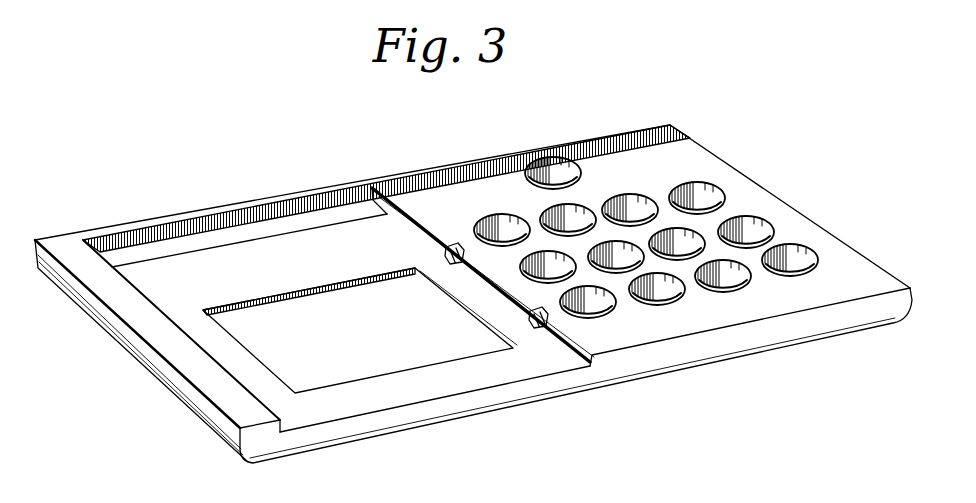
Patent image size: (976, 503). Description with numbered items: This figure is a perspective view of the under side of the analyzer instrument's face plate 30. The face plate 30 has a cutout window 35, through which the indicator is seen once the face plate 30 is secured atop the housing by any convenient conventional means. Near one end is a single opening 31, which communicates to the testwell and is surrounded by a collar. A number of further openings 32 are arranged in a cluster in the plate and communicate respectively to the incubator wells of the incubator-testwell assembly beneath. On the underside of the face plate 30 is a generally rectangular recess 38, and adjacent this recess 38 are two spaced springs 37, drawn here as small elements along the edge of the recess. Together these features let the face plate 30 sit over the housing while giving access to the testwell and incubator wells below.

The face plate 30 is at (204, 423).
The opening 31 is at (553, 158).
The openings 32 is at (803, 256).
The cutout window 35 is at (338, 377).
The springs 37 is at (455, 252).
The recess 38 is at (432, 392).